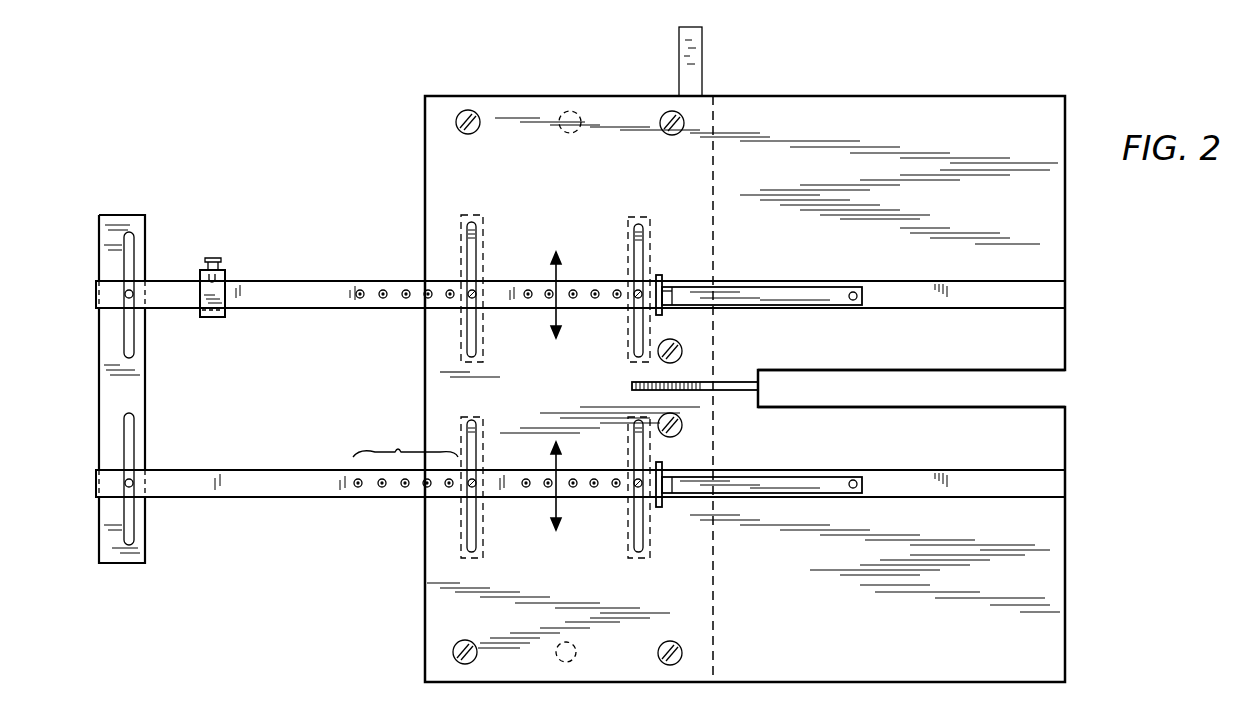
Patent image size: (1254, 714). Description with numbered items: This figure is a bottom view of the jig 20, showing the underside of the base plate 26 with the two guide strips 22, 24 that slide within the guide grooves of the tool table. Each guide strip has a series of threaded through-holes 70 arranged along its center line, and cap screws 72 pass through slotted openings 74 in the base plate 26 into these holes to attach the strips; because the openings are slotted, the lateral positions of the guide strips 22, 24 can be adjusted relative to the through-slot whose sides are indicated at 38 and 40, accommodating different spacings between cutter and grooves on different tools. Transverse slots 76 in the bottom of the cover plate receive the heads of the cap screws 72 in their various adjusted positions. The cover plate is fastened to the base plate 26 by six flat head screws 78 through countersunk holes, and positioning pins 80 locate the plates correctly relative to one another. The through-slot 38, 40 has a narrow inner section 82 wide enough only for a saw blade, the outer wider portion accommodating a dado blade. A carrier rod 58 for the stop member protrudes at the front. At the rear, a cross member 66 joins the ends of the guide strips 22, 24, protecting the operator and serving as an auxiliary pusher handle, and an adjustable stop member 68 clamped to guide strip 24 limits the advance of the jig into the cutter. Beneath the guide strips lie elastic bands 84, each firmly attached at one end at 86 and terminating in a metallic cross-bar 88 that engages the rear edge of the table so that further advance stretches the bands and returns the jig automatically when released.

The jig 20 is at (818, 92).
The guide strip 22 is at (253, 470).
The guide strip 24 is at (300, 280).
The base plate 26 is at (990, 118).
The through-slot side 38 is at (800, 405).
The through-slot side 40 is at (930, 374).
The carrier rod 58 is at (679, 56).
The cross member 66 is at (112, 403).
The adjustable stop member 68 is at (226, 272).
The threaded through-holes 70 is at (405, 437).
The cap screws 72 is at (476, 292).
The slotted openings 74 is at (478, 238).
The transverse slots 76 is at (468, 215).
The flat head screws 78 is at (468, 110).
The positioning pins 80 is at (571, 110).
The narrow inner section 82 is at (740, 384).
The elastic bands 84 is at (810, 292).
The attachment point 86 is at (853, 288).
The metallic cross-bar 88 is at (664, 276).